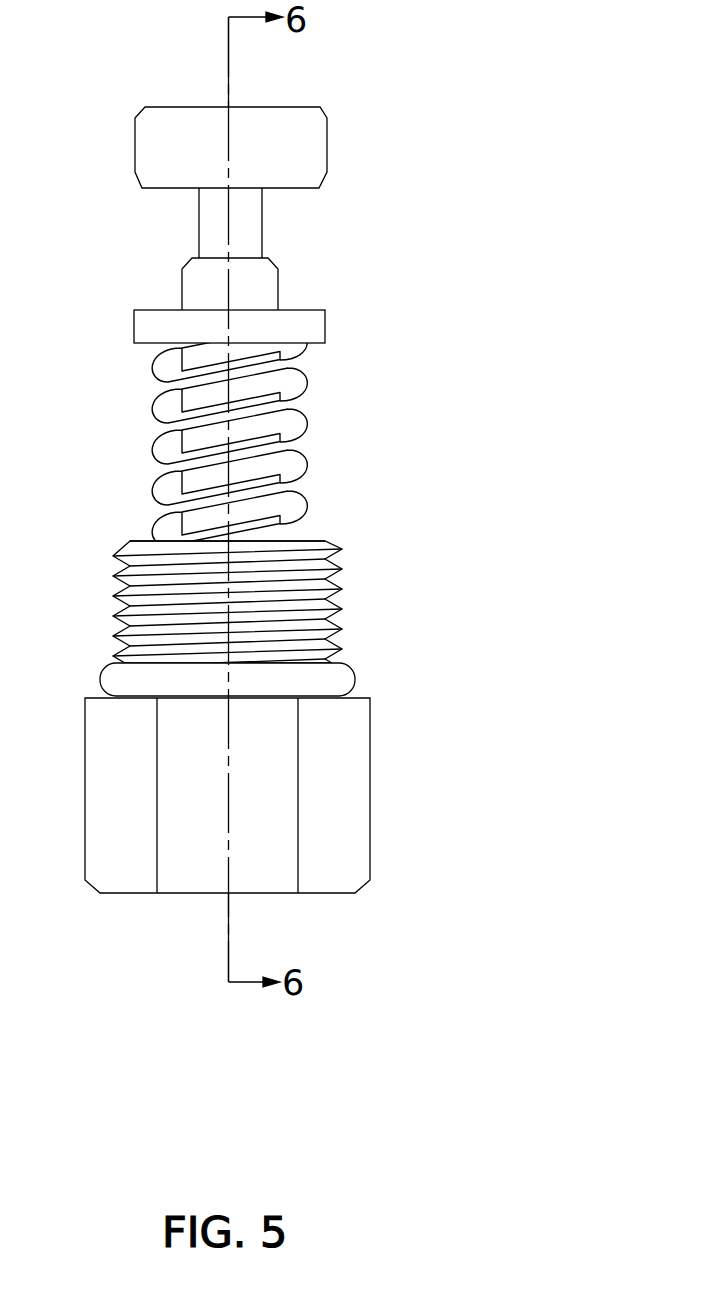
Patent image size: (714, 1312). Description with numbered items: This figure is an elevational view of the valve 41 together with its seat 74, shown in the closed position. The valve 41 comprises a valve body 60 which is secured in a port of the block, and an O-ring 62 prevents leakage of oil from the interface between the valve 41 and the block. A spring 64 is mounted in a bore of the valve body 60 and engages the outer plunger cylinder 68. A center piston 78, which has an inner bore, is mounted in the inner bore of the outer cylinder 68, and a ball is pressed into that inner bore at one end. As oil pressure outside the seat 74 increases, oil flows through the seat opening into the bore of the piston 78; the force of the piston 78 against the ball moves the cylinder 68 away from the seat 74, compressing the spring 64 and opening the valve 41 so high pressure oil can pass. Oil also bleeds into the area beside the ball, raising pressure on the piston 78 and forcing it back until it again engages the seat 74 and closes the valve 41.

The valve 41 is at (332, 536).
The valve body 60 is at (370, 790).
The O-ring 62 is at (356, 678).
The spring 64 is at (305, 417).
The outer plunger cylinder 68 is at (325, 325).
The seat 74 is at (322, 112).
The center piston 78 is at (262, 212).